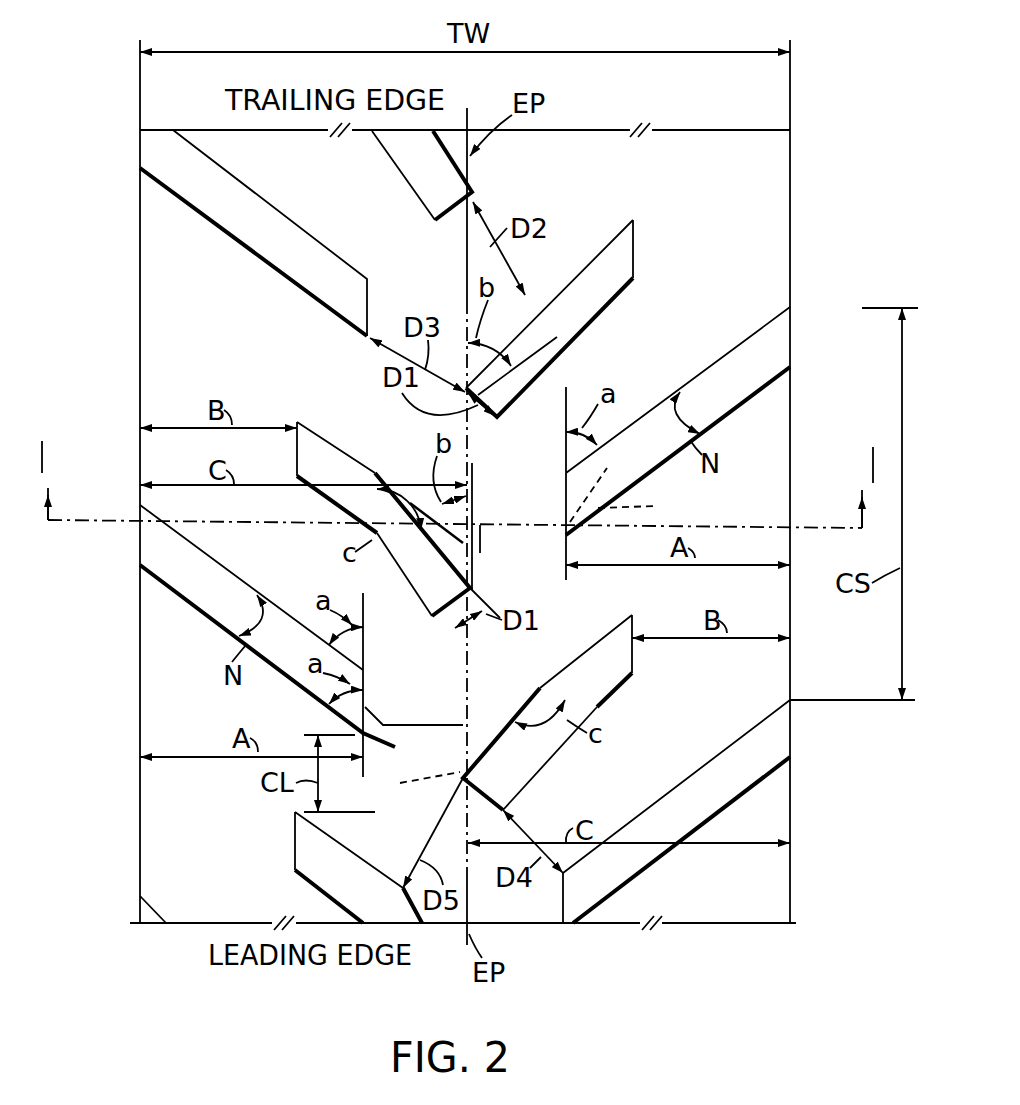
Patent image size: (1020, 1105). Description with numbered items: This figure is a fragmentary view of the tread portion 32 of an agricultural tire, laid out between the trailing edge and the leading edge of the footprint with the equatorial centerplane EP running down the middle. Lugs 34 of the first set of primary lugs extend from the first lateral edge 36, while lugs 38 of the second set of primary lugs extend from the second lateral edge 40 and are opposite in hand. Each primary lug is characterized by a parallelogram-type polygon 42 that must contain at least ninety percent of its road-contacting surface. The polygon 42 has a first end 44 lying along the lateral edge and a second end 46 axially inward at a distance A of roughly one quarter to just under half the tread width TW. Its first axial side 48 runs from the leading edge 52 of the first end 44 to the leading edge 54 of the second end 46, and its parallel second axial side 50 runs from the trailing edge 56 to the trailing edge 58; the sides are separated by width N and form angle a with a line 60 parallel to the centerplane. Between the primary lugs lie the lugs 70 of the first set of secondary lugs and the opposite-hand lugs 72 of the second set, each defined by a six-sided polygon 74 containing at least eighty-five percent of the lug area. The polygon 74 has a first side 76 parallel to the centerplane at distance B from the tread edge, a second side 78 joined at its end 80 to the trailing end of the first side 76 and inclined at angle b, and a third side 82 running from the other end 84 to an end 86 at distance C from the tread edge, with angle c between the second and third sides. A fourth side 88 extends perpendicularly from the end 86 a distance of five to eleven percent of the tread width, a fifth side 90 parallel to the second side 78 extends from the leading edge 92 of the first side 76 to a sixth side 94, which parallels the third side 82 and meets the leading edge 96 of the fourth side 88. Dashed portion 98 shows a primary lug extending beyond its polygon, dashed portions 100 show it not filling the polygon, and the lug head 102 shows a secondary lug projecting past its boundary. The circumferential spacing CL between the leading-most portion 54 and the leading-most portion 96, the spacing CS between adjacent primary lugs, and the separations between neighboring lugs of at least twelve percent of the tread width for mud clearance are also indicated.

The tread portion 32 is at (812, 178).
The lugs of the first set of primary lugs 34 is at (770, 388).
The first lateral edge 36 is at (793, 228).
The lugs of the second set of primary lugs 38 is at (173, 207).
The second lateral edge 40 is at (138, 392).
The polygon of the first set of polygons 42 is at (746, 340).
The first end 44 is at (793, 342).
The second end 46 is at (566, 497).
The first axial side 48 is at (730, 414).
The second axial side 50 is at (658, 403).
The leading edge of the first end 52 is at (793, 367).
The leading edge of the second end 54 is at (572, 537).
The trailing edge of the first end 56 is at (790, 305).
The trailing edge of the second end 58 is at (566, 473).
The line parallel to the equatorial centerplane 60 is at (568, 386).
The lugs of the first set of secondary lugs 70 is at (606, 232).
The lugs of the second set of secondary lugs 72 is at (332, 430).
The polygon of the second polygon type 74 is at (360, 463).
The first side 76 is at (297, 448).
The second side 78 is at (352, 462).
The end of the second side 80 is at (297, 418).
The third side 82 is at (440, 558).
The other end of the second side 84 is at (413, 498).
The end of the third side 86 is at (474, 588).
The fourth side 88 is at (455, 598).
The fifth side 90 is at (324, 496).
The leading edge of the first side 92 is at (294, 480).
The sixth side 94 is at (408, 597).
The leading edge of the fourth side 96 is at (430, 620).
The dashed portion 98 is at (646, 505).
The dashed portions 100 is at (616, 482).
The head of the lug 102 is at (410, 790).